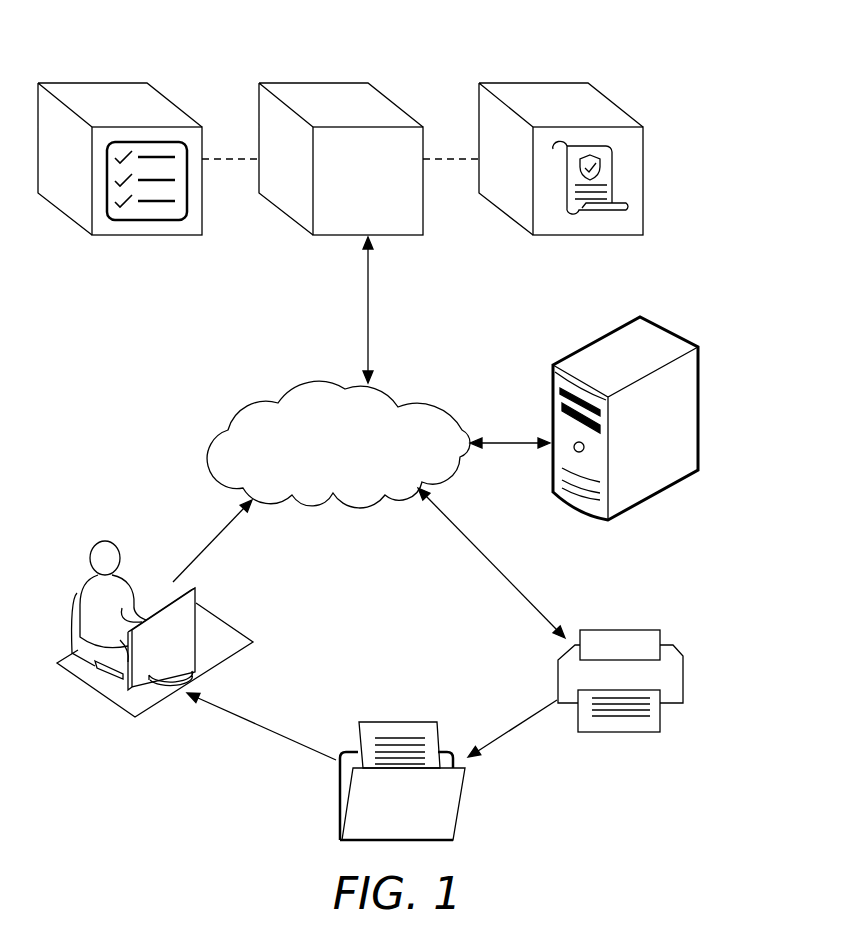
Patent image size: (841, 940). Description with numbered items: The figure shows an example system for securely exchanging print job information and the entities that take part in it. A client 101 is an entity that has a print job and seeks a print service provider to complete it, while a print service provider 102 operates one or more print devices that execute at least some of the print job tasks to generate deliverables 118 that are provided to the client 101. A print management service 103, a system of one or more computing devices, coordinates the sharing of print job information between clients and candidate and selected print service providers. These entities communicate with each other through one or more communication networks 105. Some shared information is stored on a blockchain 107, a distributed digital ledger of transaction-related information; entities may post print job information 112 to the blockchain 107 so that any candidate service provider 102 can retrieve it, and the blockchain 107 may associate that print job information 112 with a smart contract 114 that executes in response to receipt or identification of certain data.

The client 101 is at (108, 548).
The print service provider 102 is at (618, 645).
The print management service 103 is at (643, 470).
The communication network 105 is at (243, 410).
The blockchain 107 is at (468, 62).
The print job information 112 is at (147, 216).
The smart contract 114 is at (594, 212).
The deliverables 118 is at (397, 722).